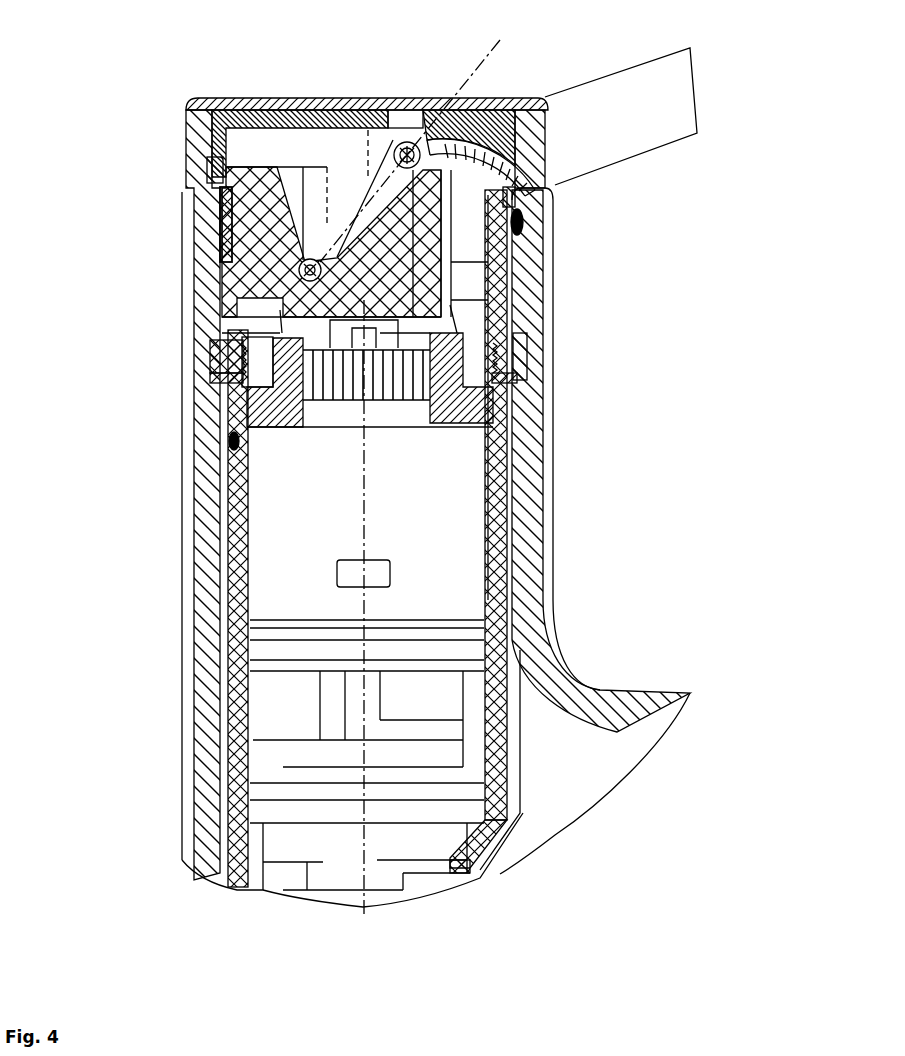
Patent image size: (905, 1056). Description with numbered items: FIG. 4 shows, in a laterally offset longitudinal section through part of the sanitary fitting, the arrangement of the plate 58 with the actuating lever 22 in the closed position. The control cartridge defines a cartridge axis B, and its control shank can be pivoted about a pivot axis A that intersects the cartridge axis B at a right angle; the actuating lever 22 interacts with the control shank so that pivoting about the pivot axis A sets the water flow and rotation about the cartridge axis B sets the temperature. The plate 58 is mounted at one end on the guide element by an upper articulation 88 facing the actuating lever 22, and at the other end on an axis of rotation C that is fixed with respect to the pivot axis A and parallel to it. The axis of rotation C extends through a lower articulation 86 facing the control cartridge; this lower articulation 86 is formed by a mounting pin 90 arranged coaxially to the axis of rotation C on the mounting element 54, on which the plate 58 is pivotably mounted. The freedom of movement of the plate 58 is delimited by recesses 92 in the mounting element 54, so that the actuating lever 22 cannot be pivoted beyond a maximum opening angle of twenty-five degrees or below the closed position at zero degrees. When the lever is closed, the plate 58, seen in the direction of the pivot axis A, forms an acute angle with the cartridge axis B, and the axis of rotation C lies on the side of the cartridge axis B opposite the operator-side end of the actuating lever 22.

The actuating lever 22 is at (655, 110).
The mounting element 54 is at (440, 232).
The plate 58 is at (367, 237).
The lower articulation 86 is at (235, 255).
The upper articulation 88 is at (376, 103).
The mounting pin 90 is at (440, 297).
The recesses 92 is at (403, 183).
The pivot axis A is at (352, 228).
The cartridge axis B is at (367, 453).
The axis of rotation C is at (335, 268).